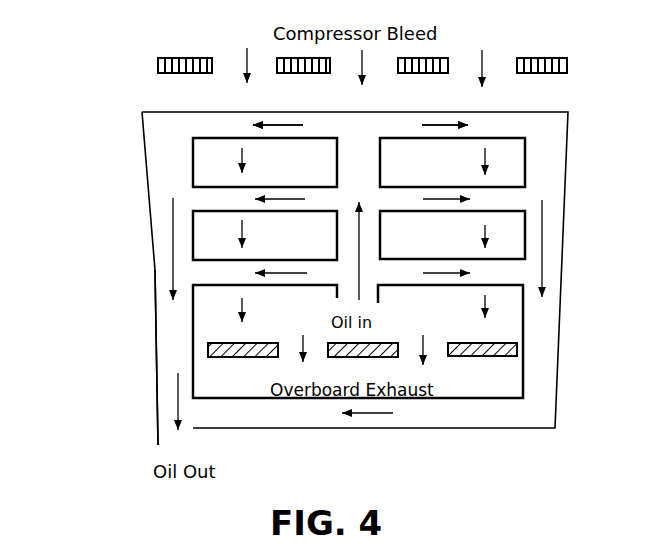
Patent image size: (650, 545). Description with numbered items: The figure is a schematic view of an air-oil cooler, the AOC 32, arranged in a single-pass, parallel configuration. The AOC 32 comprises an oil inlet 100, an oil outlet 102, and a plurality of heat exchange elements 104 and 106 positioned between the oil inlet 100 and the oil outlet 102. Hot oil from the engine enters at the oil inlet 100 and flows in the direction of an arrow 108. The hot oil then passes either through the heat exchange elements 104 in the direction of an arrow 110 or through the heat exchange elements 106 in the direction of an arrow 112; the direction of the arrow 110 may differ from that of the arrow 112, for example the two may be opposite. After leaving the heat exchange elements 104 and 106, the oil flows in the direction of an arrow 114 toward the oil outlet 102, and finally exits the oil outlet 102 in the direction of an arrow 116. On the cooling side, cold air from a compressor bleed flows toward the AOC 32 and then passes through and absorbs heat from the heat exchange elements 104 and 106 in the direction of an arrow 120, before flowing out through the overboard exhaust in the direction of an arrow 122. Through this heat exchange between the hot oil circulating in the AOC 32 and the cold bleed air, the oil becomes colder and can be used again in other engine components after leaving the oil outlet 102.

The air-oil cooler 32 is at (130, 181).
The oil inlet 100 is at (336, 290).
The oil outlet 102 is at (172, 447).
The heat exchange elements 104 is at (252, 181).
The heat exchange elements 106 is at (410, 184).
The arrow 108 is at (359, 272).
The arrow 110 is at (292, 124).
The arrow 112 is at (446, 125).
The arrow 114 is at (173, 268).
The arrow 116 is at (483, 64).
The arrow 120 is at (487, 150).
The arrow 122 is at (427, 345).